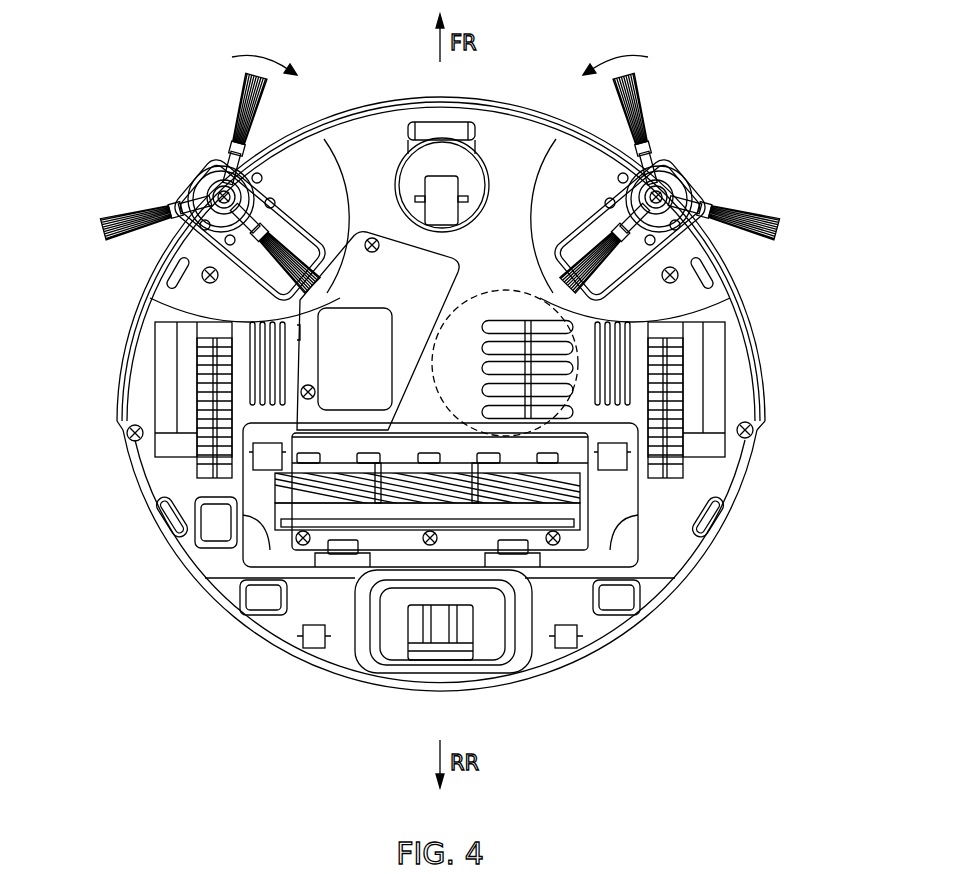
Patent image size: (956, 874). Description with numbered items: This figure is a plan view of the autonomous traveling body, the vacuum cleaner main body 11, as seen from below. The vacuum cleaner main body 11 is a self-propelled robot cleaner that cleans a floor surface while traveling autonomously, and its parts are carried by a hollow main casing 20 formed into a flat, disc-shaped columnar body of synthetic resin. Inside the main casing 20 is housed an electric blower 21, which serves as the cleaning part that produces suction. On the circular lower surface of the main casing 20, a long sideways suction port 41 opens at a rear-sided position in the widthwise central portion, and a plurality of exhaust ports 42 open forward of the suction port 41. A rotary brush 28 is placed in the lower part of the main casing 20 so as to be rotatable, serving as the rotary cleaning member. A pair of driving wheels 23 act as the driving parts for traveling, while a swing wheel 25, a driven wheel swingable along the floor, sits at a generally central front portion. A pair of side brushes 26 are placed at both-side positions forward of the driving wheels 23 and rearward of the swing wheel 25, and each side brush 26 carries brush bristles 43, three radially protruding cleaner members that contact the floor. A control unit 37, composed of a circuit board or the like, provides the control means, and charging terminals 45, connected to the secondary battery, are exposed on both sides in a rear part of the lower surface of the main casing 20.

The vacuum cleaner main body 11 is at (565, 60).
The main casing 20 is at (509, 103).
The electric blower 21 is at (493, 297).
The driving wheels 23 is at (205, 360).
The swing wheel 25 is at (447, 215).
The side brushes 26 is at (176, 147).
The rotary brush 28 is at (317, 492).
The control unit 37 is at (373, 237).
The suction port 41 is at (420, 511).
The exhaust ports 42 is at (541, 326).
The brush bristles 43 is at (243, 117).
The charging terminals 45 is at (265, 602).